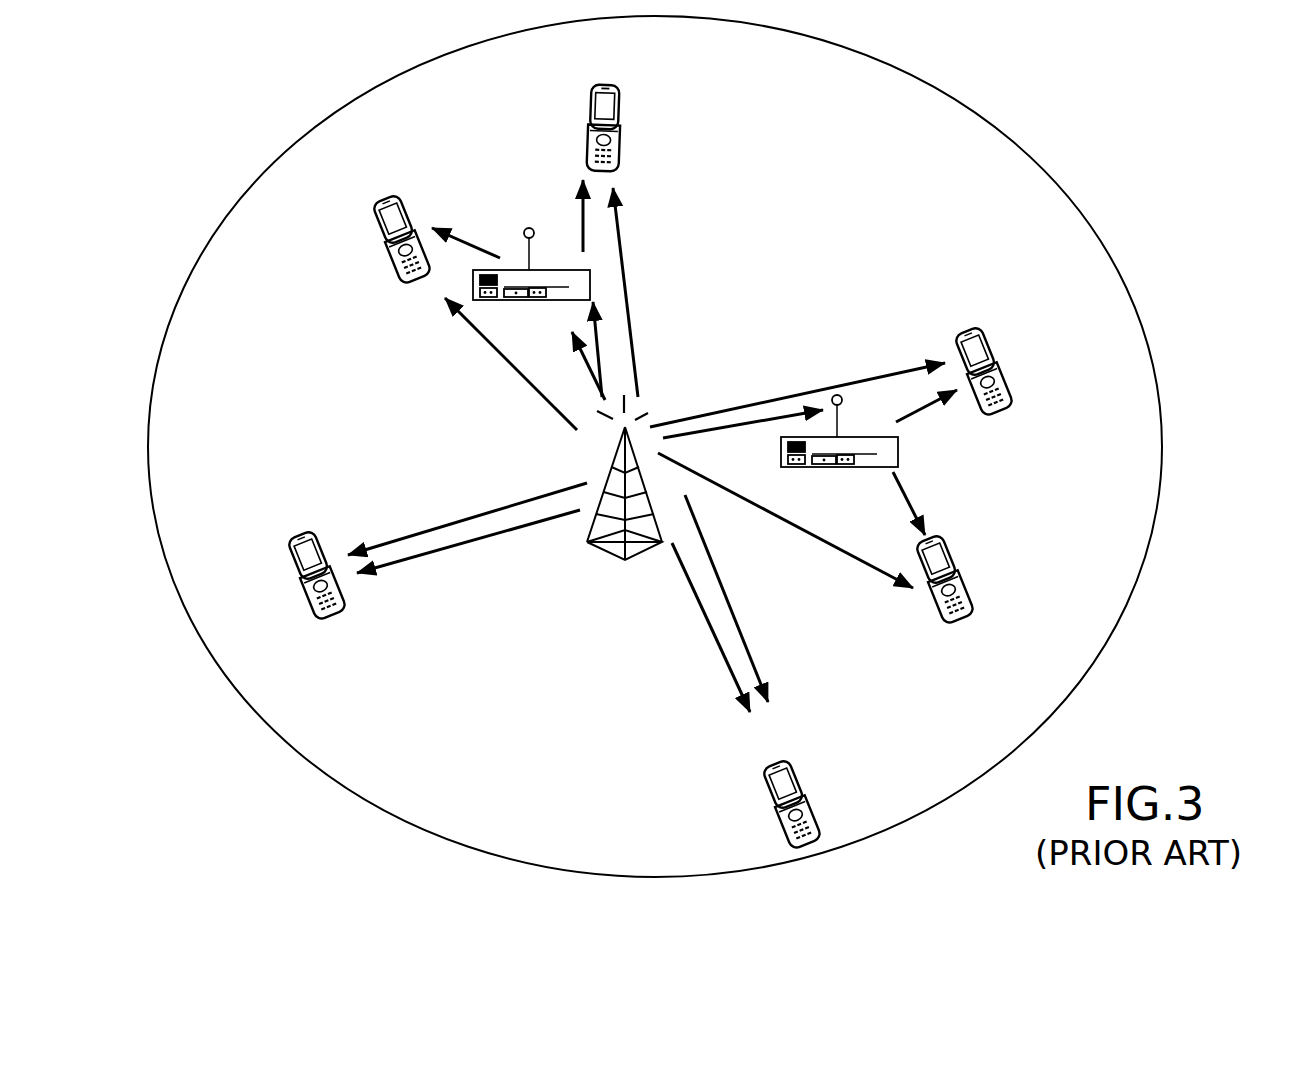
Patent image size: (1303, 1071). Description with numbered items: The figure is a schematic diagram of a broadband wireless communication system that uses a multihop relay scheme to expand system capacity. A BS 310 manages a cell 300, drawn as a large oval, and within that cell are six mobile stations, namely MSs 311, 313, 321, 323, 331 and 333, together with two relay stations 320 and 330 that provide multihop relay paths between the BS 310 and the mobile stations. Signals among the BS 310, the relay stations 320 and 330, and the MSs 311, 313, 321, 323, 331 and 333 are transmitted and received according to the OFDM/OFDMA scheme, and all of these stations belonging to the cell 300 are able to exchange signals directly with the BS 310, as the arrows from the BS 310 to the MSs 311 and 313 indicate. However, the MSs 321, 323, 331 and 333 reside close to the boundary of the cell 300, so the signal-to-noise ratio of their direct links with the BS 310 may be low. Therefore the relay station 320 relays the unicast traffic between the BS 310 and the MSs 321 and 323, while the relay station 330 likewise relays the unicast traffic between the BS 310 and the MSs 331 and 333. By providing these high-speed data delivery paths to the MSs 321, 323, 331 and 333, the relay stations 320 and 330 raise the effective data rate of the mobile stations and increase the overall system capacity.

The cell 300 is at (655, 446).
The BS 310 is at (623, 497).
The MS 311 is at (301, 532).
The MS 313 is at (778, 760).
The relay station 320 is at (839, 444).
The MS 321 is at (971, 330).
The MS 323 is at (931, 537).
The relay station 330 is at (531, 277).
The MS 331 is at (389, 195).
The MS 333 is at (607, 82).